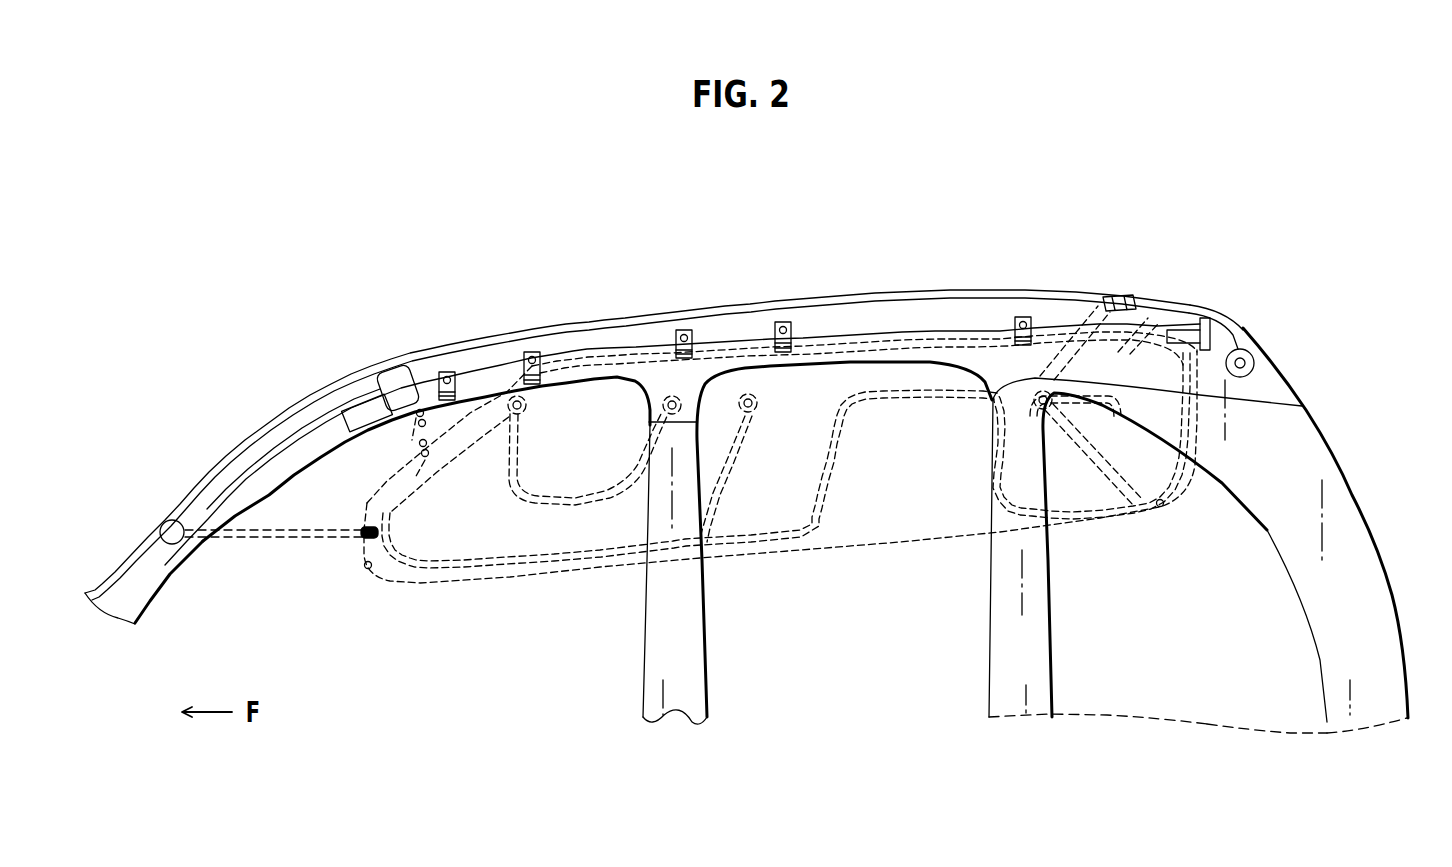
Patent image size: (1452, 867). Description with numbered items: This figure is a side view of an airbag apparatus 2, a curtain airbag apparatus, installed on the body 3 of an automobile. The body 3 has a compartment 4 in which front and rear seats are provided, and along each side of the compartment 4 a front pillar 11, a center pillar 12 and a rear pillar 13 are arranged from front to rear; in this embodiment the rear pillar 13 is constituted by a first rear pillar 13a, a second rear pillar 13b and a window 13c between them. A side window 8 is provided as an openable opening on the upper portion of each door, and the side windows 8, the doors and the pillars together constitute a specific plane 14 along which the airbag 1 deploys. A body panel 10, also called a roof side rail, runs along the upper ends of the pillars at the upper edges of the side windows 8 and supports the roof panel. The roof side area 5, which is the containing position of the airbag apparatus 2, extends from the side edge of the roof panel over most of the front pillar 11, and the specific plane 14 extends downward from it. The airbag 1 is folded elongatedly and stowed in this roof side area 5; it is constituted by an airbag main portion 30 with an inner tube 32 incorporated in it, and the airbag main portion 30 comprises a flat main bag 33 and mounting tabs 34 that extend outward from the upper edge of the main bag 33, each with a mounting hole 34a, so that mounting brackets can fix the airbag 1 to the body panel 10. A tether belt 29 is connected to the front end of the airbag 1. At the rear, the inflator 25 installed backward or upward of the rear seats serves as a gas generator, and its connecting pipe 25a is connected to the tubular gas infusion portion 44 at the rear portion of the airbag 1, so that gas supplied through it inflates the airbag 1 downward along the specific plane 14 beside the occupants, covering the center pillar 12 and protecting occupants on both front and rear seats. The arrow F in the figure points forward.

The airbag 1 is at (487, 360).
The airbag apparatus 2 is at (510, 350).
The vehicle body 3 is at (1389, 572).
The compartment 4 is at (438, 710).
The roof side area 5 is at (453, 357).
The side window 8 is at (310, 490).
The body panel 10 is at (642, 408).
The front pillar 11 is at (170, 573).
The center pillar 12 is at (708, 673).
The rear pillar 13 is at (989, 676).
The first rear pillar 13a is at (1026, 693).
The second rear pillar 13b is at (1370, 708).
The window 13c is at (1270, 708).
The specific plane 14 is at (707, 516).
The inflator 25 is at (1266, 364).
The connecting pipe 25a is at (1233, 318).
The tether belt 29 is at (213, 493).
The airbag main portion 30 is at (968, 345).
The inner tube 32 is at (1088, 313).
The main bag 33 is at (907, 343).
The mounting tab 34 is at (437, 373).
The mounting hole 34a is at (677, 337).
The gas infusion portion 44 is at (1113, 300).